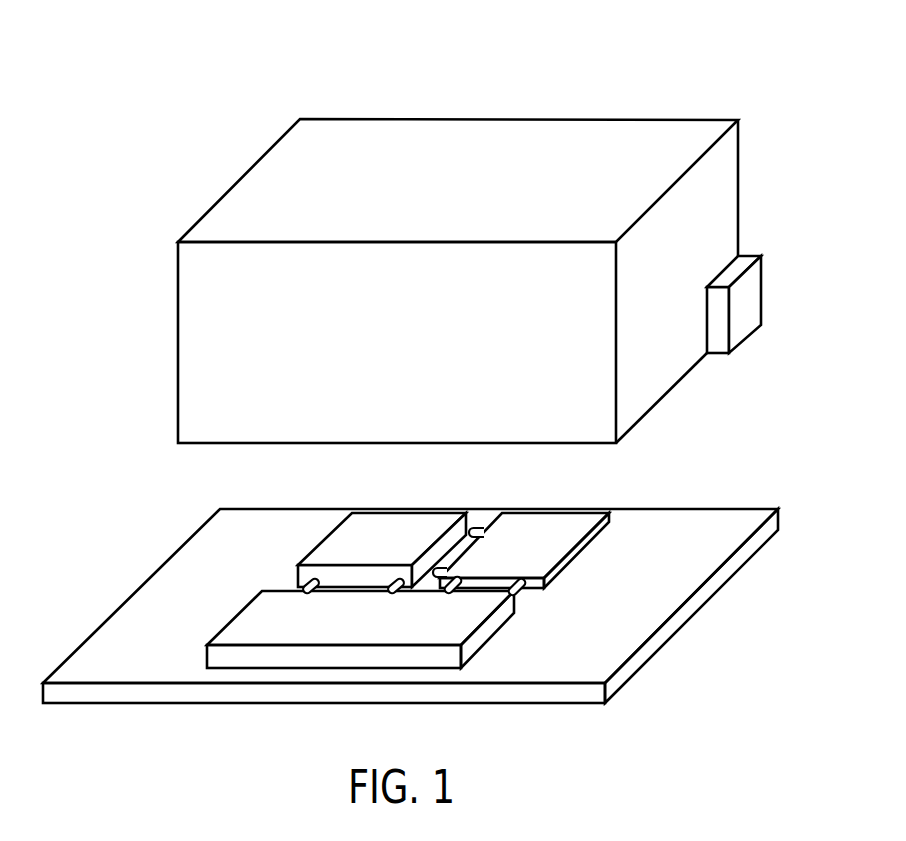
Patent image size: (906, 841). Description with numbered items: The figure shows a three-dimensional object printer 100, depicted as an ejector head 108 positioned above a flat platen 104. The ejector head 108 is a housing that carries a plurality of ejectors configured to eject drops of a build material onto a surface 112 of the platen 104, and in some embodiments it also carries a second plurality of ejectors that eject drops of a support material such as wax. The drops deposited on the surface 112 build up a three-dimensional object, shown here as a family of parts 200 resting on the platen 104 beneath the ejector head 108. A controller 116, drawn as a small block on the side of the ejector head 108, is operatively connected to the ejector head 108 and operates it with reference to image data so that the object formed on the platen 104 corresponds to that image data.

The three-dimensional object printer 100 is at (216, 101).
The platen 104 is at (741, 508).
The ejector head 108 is at (605, 119).
The surface of the platen 112 is at (178, 570).
The controller 116 is at (753, 256).
The family of parts 200 is at (360, 534).